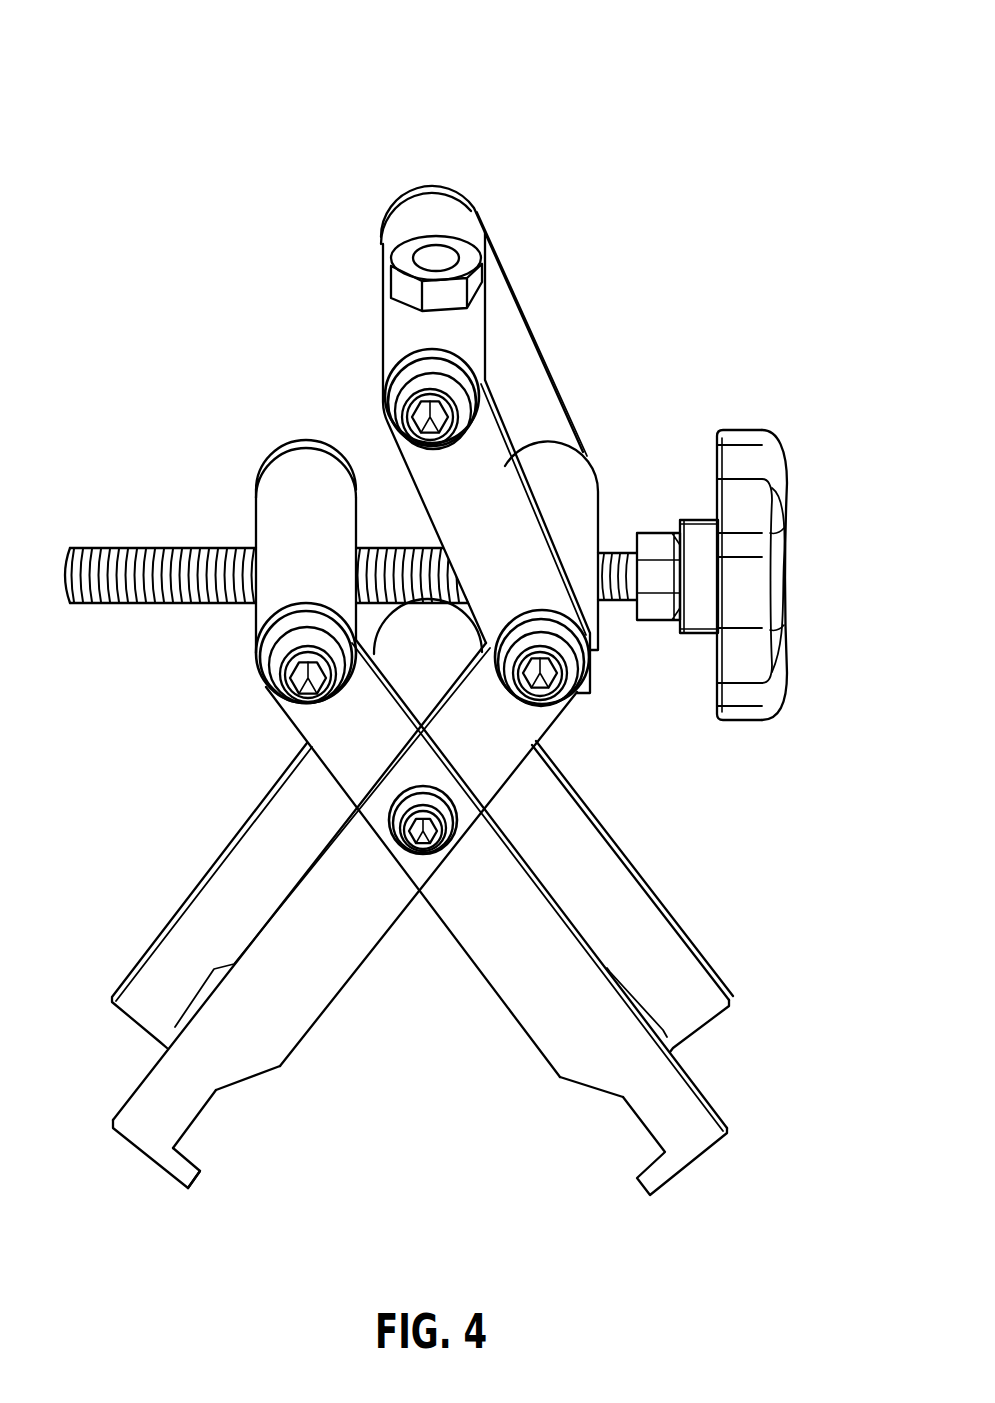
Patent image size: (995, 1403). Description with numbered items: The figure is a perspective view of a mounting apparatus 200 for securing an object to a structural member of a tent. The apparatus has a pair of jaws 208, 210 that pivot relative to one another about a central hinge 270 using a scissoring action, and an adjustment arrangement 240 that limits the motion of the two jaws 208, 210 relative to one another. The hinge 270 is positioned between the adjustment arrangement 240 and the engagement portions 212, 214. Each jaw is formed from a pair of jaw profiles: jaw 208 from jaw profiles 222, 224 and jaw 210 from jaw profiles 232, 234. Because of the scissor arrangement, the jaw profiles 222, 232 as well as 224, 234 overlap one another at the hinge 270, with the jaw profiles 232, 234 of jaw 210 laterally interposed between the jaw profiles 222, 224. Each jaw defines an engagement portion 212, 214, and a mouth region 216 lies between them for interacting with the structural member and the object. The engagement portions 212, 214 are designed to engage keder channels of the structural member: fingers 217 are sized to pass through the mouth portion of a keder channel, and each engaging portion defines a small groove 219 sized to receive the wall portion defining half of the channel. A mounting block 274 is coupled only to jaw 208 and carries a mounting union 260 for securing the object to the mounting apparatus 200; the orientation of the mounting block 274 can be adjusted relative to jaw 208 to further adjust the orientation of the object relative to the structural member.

The mounting apparatus 200 is at (407, 100).
The jaw 208 is at (190, 1214).
The jaw 210 is at (743, 944).
The engagement portion 212 is at (247, 1155).
The engagement portion 214 is at (601, 1166).
The mouth region 216 is at (510, 1225).
The finger 217 is at (192, 1183).
The groove 219 is at (286, 1101).
The jaw profile 222 is at (150, 1140).
The jaw profile 224 is at (215, 912).
The jaw profile 232 is at (527, 905).
The jaw profile 234 is at (540, 787).
The adjustment arrangement 240 is at (799, 522).
The mounting union 260 is at (458, 164).
The central hinge 270 is at (395, 807).
The mounting block 274 is at (405, 345).